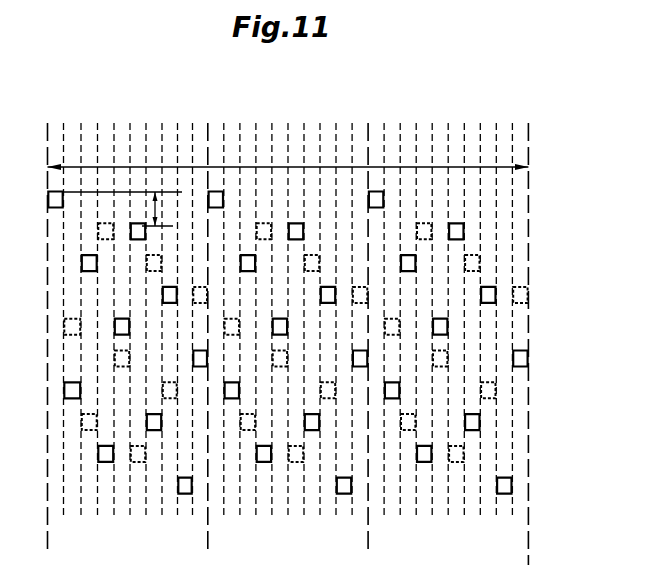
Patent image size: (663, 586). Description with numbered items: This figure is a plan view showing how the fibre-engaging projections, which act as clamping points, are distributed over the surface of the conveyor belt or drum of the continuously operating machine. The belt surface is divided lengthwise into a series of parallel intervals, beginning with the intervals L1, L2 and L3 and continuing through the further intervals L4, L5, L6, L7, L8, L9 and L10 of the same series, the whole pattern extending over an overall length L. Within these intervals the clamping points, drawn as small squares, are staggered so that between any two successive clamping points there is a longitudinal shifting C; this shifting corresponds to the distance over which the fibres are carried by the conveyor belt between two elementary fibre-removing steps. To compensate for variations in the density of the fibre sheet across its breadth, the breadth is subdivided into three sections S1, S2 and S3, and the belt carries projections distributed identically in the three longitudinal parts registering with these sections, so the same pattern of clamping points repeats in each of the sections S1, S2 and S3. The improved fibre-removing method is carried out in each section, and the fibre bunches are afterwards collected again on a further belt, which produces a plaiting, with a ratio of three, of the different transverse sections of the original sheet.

The interval L1 is at (52, 320).
The interval L2 is at (71, 320).
The interval L3 is at (88, 320).
The fourth line of section L4 is at (104, 320).
The fifth line of section L5 is at (120, 320).
The sixth line of section L6 is at (136, 320).
The seventh line of section L7 is at (153, 320).
The eighth line of section L8 is at (168, 320).
The ninth line of section L9 is at (184, 320).
The tenth line of section L10 is at (201, 320).
The total length of pattern L is at (288, 161).
The longitudinal shifting C is at (122, 209).
The section S1 is at (208, 543).
The section S2 is at (368, 543).
The section S3 is at (528, 543).